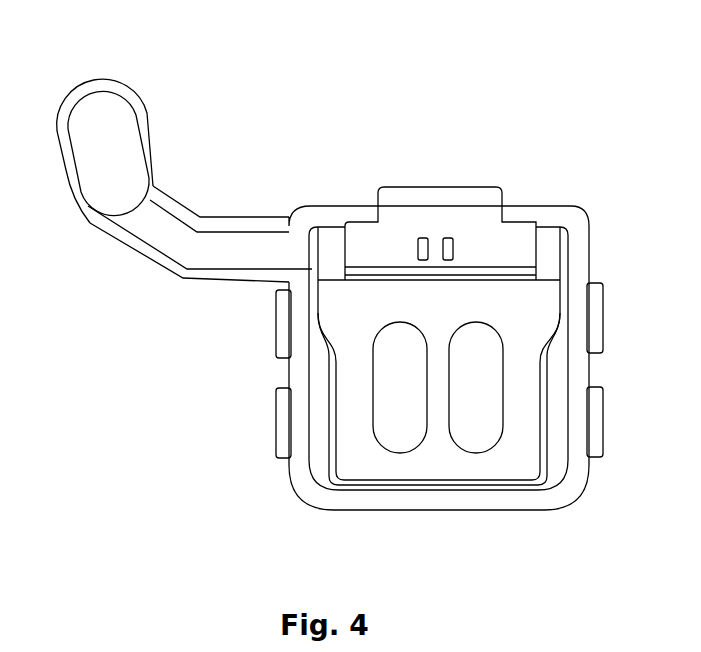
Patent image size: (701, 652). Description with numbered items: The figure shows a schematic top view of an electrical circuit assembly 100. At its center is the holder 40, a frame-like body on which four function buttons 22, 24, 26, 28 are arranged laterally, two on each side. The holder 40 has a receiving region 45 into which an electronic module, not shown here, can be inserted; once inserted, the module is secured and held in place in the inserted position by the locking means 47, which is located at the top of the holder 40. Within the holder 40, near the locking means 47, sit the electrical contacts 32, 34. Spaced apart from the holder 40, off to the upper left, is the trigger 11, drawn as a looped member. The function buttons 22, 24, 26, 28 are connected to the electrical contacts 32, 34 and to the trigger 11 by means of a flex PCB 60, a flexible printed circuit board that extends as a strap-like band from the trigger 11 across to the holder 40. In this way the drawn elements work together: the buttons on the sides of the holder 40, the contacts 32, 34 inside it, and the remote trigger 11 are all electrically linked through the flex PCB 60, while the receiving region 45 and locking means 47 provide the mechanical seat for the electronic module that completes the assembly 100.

The electrical circuit assembly 100 is at (270, 83).
The trigger 11 is at (90, 153).
The flex PCB 60 is at (246, 262).
The holder 40 is at (565, 507).
The receiving region for the electronic module 45 is at (347, 360).
The locking means for the electronic module 47 is at (433, 187).
The electrical contact 32 is at (417, 247).
The electrical contact 34 is at (454, 247).
The function button 22 is at (276, 433).
The function button 24 is at (276, 328).
The function button 26 is at (602, 423).
The function button 28 is at (602, 320).